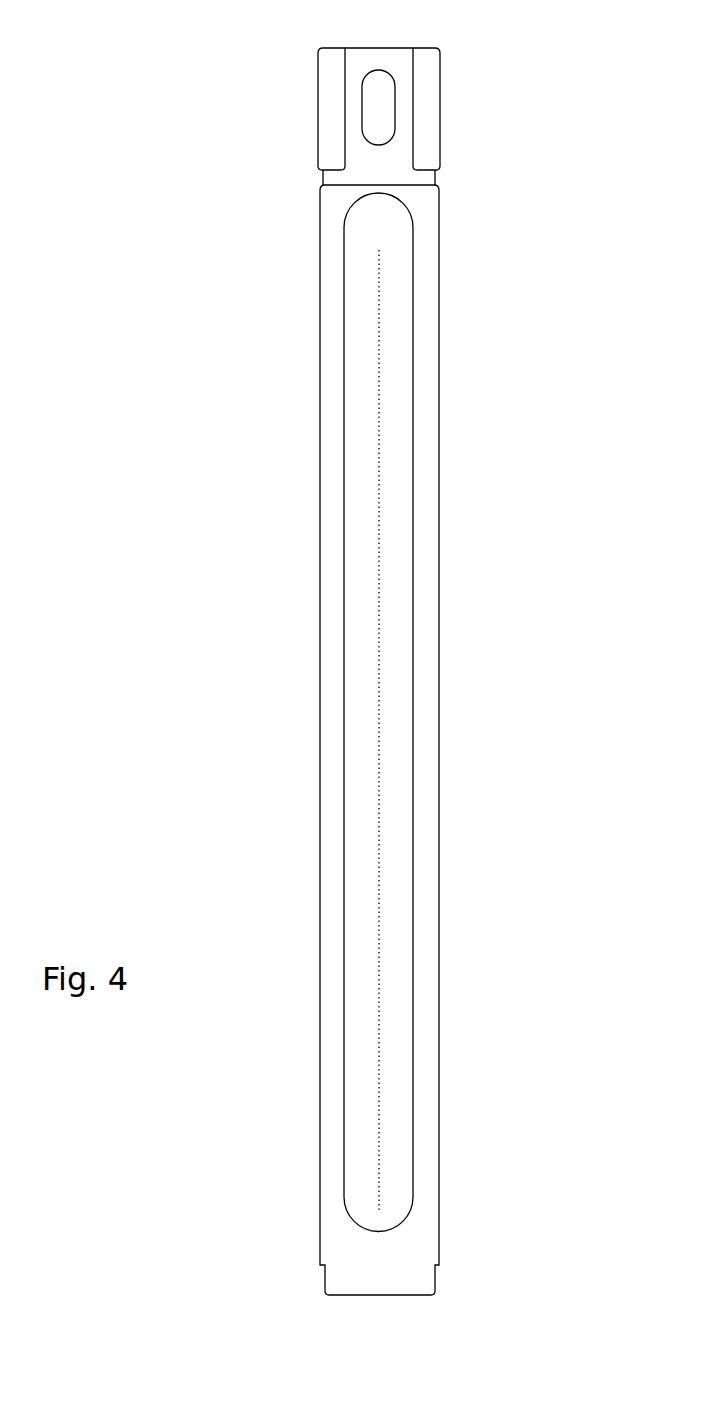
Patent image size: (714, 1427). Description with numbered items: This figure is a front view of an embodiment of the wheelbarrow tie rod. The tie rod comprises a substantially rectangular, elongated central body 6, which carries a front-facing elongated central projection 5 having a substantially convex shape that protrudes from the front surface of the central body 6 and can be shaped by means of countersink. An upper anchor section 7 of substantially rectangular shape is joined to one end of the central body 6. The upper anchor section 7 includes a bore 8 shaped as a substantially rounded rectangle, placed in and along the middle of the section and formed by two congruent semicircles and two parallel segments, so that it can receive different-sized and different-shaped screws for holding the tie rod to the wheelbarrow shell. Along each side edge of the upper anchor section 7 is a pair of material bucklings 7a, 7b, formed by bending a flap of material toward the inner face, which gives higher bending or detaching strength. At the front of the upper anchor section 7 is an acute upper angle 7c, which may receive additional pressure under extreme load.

The central projection 5 is at (380, 526).
The central body 6 is at (472, 792).
The upper anchor section 7 is at (372, 58).
The material buckling 7a is at (442, 110).
The material buckling 7b is at (337, 115).
The upper angle 7c is at (313, 184).
The bore 8 is at (380, 130).